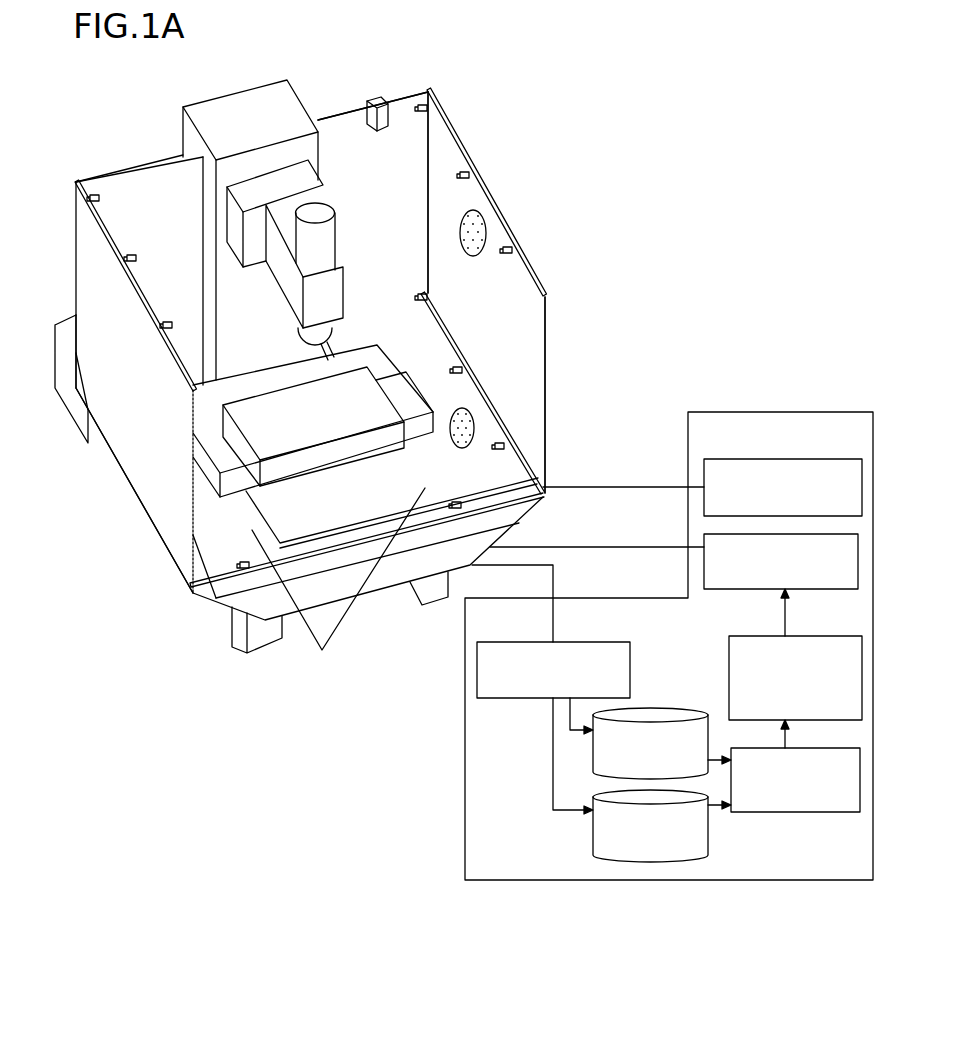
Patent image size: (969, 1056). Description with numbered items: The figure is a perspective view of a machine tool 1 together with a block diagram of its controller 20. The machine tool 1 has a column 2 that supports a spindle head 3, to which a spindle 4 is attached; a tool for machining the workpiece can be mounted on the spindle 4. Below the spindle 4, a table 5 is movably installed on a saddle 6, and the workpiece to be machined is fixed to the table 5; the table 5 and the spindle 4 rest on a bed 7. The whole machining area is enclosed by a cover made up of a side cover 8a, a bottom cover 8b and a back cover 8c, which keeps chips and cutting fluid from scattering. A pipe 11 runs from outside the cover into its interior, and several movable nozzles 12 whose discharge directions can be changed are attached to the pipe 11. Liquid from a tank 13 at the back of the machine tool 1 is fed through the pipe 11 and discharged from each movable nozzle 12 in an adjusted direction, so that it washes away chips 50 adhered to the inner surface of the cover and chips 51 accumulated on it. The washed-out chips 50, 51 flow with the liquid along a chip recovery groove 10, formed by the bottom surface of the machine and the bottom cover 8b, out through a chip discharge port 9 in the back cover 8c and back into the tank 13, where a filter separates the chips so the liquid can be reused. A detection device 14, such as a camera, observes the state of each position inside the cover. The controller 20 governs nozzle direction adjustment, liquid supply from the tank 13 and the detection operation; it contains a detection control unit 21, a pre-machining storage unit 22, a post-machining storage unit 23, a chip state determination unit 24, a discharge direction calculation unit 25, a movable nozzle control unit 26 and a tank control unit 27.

The machine tool 1 is at (90, 96).
The column 2 is at (213, 100).
The spindle head 3 is at (325, 178).
The spindle 4 is at (297, 328).
The table 5 is at (258, 446).
The saddle 6 is at (207, 478).
The bed 7 is at (232, 628).
The side cover 8a is at (117, 446).
The bottom cover 8b is at (210, 602).
The back cover 8c is at (152, 176).
The chip discharge port 9 is at (360, 340).
The chip recovery groove 10 is at (338, 585).
The pipe 11 is at (88, 222).
The movable nozzle 12 is at (138, 262).
The tank 13 is at (65, 400).
The detection device 14 is at (385, 100).
The controller 20 is at (806, 412).
The detection control unit 21 is at (540, 644).
The pre-machining storage unit 22 is at (658, 710).
The post-machining storage unit 23 is at (590, 836).
The chip state determination unit 24 is at (781, 813).
The discharge direction calculation unit 25 is at (728, 665).
The movable nozzle control unit 26 is at (745, 590).
The tank control unit 27 is at (744, 460).
The chips adhered to inner surface of cover 50 is at (476, 256).
The chips accumulated on inner surface of cover 51 is at (470, 405).